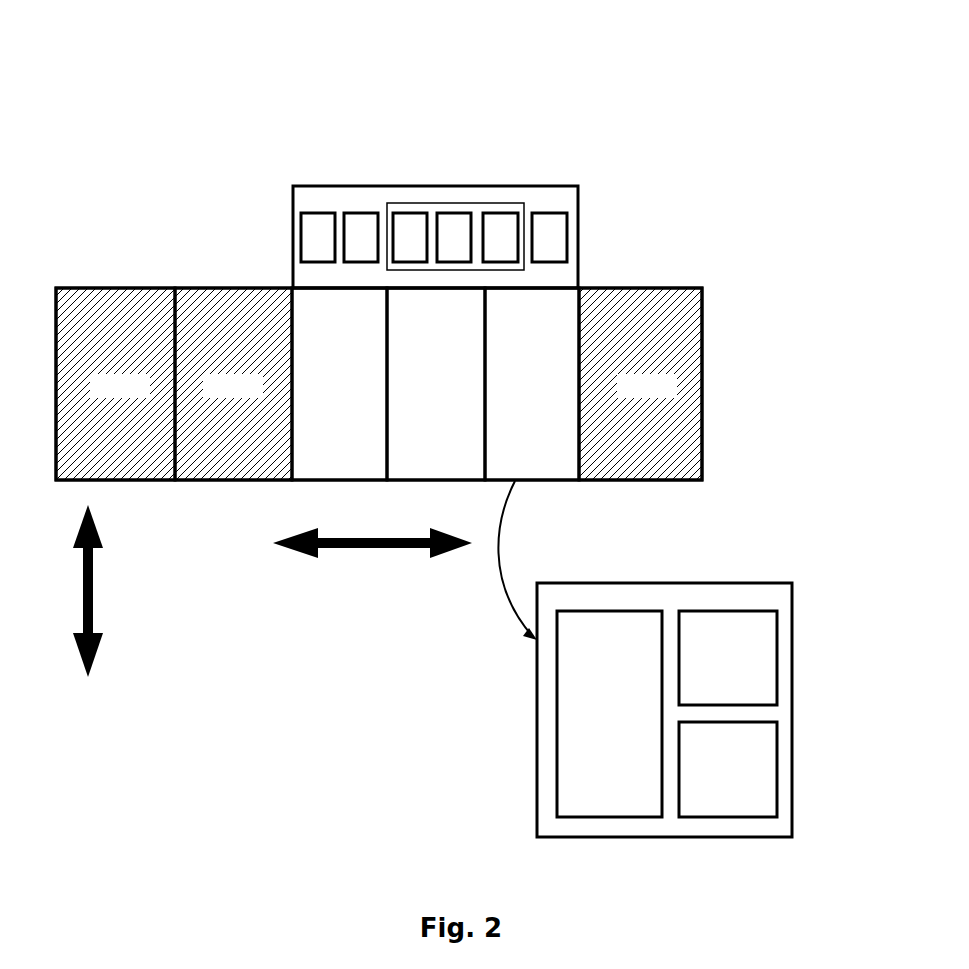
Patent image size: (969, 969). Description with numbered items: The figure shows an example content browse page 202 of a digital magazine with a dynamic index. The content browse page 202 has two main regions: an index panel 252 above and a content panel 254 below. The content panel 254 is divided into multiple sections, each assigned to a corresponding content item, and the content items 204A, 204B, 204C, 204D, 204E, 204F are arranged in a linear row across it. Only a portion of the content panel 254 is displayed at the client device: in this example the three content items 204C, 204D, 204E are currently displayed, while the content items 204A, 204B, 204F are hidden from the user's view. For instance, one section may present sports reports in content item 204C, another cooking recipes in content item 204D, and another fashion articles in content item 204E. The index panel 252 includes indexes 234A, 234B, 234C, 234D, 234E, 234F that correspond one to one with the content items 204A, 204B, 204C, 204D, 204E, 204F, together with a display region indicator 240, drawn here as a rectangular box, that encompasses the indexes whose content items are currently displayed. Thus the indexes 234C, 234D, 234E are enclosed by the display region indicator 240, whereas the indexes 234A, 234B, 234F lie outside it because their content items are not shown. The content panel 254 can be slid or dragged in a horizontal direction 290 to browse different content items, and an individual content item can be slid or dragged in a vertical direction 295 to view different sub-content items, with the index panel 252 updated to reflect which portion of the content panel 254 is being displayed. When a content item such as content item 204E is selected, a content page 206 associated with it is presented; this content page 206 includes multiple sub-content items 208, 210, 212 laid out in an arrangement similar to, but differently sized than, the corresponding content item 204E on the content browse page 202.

The content browse page 202 is at (347, 100).
The index 234A is at (300, 233).
The index 234B is at (352, 213).
The index 234C is at (410, 213).
The index 234D is at (452, 213).
The index 234E is at (500, 213).
The index 234F is at (567, 230).
The display region indicator 240 is at (524, 270).
The index panel 252 is at (753, 282).
The content panel 254 is at (753, 478).
The content item 204A is at (115, 384).
The content item 204B is at (233, 384).
The content item 204C is at (339, 384).
The content item 204D is at (436, 384).
The content item 204E is at (532, 384).
The content item 204F is at (640, 384).
The vertical direction 295 is at (116, 591).
The horizontal direction 290 is at (372, 556).
The content page 206 is at (747, 581).
The sub-content item 208 is at (609, 714).
The sub-content item 210 is at (728, 658).
The sub-content item 212 is at (728, 769).